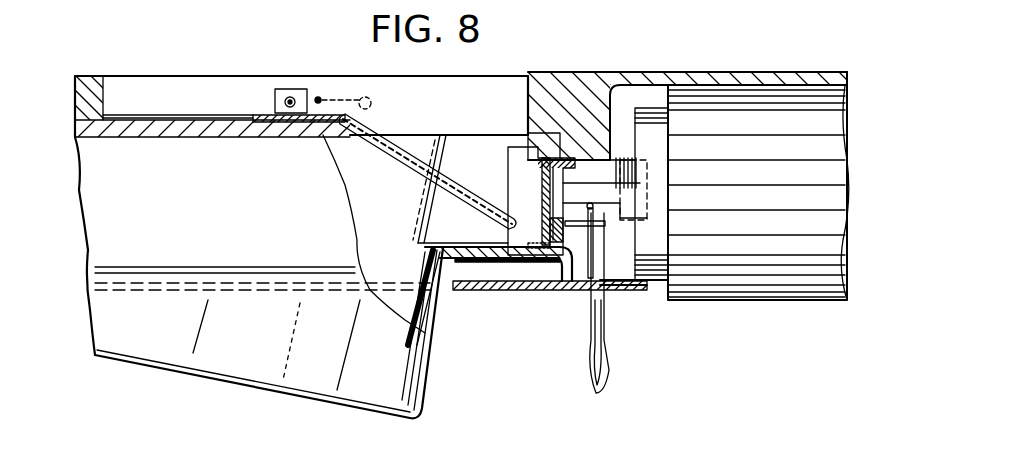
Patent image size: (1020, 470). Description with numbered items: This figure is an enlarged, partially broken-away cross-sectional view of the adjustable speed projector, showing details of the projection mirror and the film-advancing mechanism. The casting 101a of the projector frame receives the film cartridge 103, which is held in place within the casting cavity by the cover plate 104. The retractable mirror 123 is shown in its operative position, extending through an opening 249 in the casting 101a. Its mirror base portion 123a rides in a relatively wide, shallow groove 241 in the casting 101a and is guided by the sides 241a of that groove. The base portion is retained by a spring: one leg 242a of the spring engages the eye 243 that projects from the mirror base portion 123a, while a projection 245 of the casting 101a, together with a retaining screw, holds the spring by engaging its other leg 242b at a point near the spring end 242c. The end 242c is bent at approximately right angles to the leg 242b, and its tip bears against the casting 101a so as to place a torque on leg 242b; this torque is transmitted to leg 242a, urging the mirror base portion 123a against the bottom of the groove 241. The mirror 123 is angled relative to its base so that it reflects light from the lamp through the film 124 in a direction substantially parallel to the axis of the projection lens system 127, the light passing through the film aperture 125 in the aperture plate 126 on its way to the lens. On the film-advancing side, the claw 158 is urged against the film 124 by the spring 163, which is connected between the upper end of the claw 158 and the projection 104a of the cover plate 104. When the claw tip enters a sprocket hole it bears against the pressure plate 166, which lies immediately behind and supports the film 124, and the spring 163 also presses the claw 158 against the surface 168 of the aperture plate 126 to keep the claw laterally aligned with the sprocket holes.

The casting 101a is at (598, 73).
The film cartridge 103 is at (427, 382).
The cover plate 104 is at (472, 291).
The projection of the cover plate 104a is at (636, 291).
The mirror 123 is at (415, 168).
The mirror base portion 123a is at (283, 160).
The film 124 is at (540, 190).
The film aperture 125 is at (563, 213).
The aperture plate 126 is at (630, 176).
The projection lens system 127 is at (830, 255).
The film-advancing claw 158 is at (598, 228).
The spring 163 is at (610, 364).
The pressure plate 166 is at (550, 226).
The surface of aperture plate 168 is at (580, 291).
The groove 241 is at (191, 100).
The sides of groove 241a is at (128, 114).
The leg of spring 242a is at (289, 97).
The leg of spring 242b is at (318, 97).
The end of spring 242c is at (372, 99).
The eye 243 is at (275, 99).
The projection of casting 245 is at (358, 86).
The opening in casting 249 is at (490, 126).